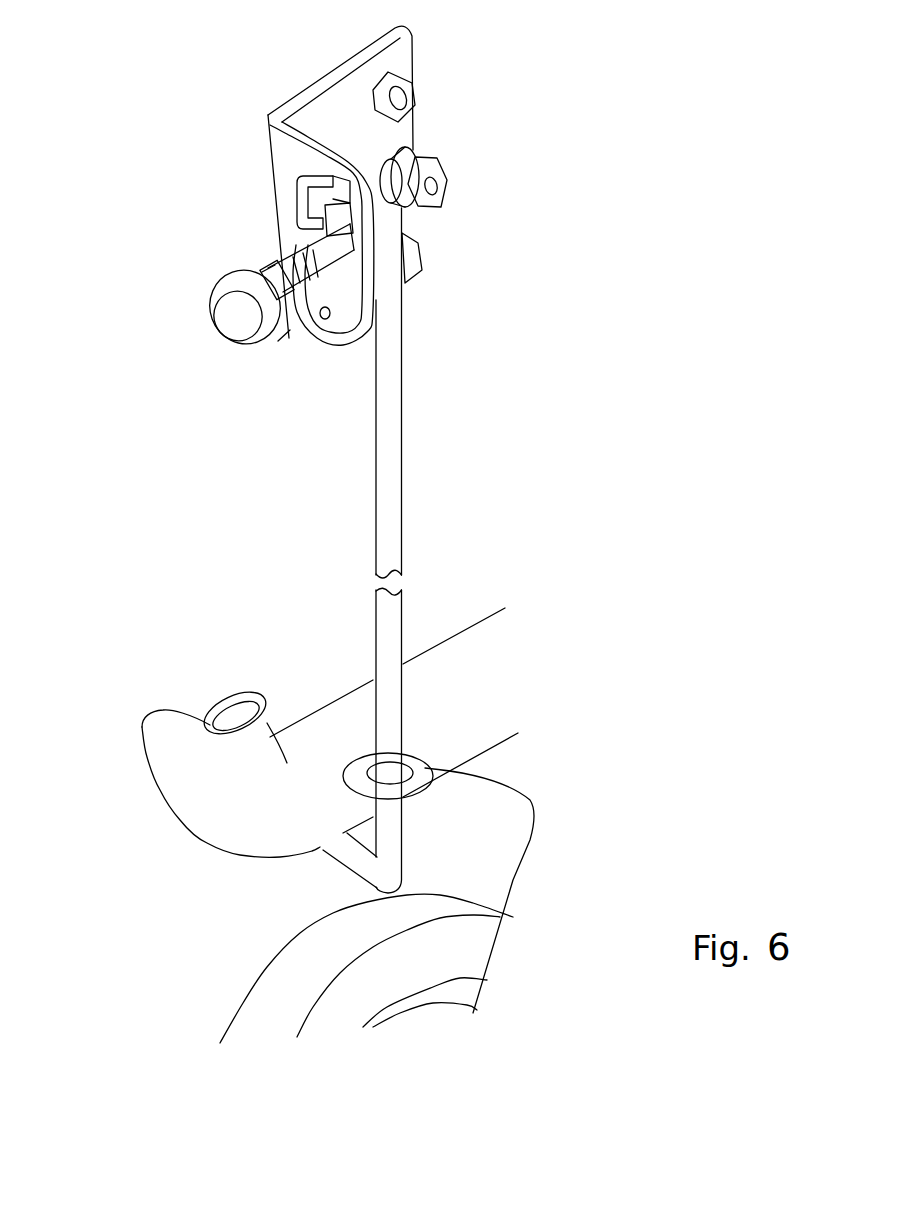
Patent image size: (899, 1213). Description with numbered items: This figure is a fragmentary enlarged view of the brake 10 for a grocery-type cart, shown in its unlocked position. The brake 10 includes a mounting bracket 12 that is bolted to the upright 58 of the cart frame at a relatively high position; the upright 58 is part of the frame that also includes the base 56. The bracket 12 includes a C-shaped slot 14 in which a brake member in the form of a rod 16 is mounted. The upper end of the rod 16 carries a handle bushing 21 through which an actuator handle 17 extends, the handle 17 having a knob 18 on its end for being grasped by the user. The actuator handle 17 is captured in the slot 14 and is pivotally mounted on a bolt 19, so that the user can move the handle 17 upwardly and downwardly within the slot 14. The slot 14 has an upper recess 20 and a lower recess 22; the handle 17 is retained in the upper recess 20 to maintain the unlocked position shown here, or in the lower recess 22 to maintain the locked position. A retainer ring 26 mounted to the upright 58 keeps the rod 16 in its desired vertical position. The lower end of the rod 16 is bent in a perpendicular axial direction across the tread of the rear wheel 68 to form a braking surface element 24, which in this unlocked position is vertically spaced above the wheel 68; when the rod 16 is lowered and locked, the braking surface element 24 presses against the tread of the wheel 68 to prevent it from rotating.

The brake 10 is at (138, 262).
The mounting bracket 12 is at (397, 63).
The C-shaped slot 14 is at (357, 273).
The rod 16 is at (387, 525).
The actuator handle 17 is at (323, 240).
The knob 18 is at (236, 322).
The bolt 19 is at (447, 187).
The upper recess 20 is at (342, 188).
The handle bushing 21 is at (410, 220).
The lower recess 22 is at (322, 318).
The braking surface element 24 is at (350, 860).
The retainer ring 26 is at (530, 800).
The base 56 is at (521, 620).
The upright 58 is at (180, 777).
The rear wheel 68 is at (297, 978).